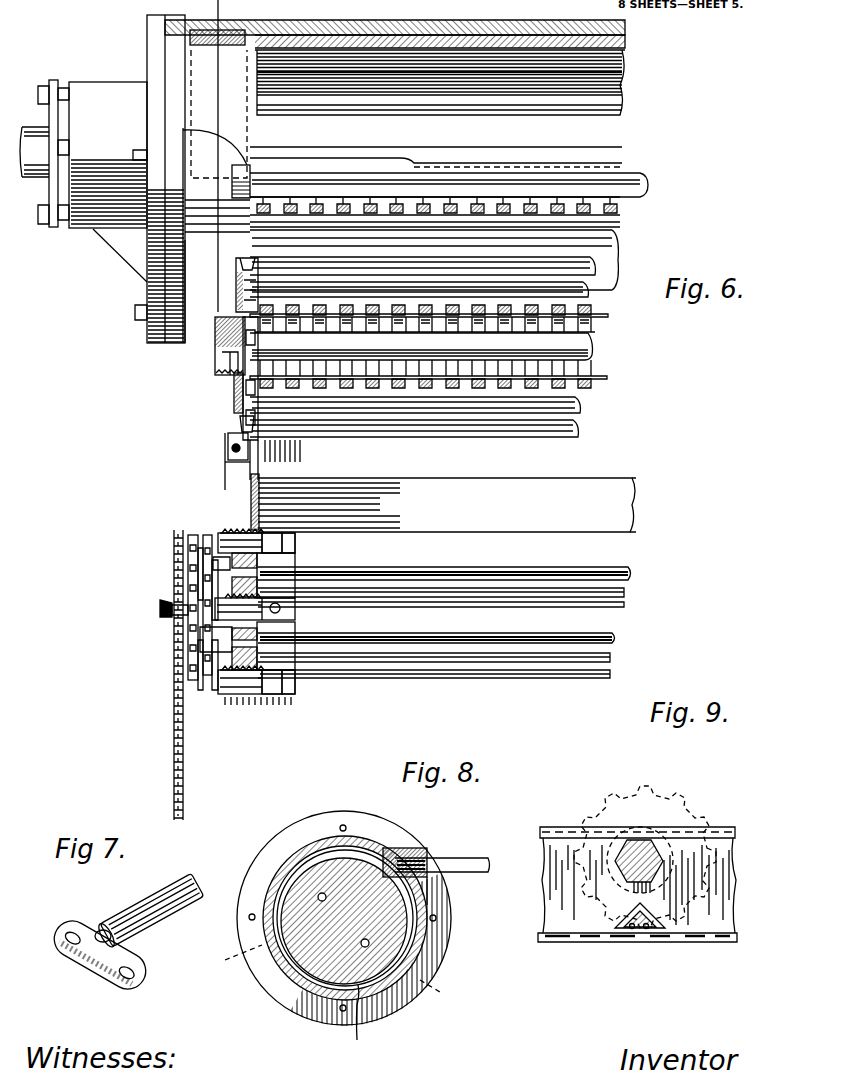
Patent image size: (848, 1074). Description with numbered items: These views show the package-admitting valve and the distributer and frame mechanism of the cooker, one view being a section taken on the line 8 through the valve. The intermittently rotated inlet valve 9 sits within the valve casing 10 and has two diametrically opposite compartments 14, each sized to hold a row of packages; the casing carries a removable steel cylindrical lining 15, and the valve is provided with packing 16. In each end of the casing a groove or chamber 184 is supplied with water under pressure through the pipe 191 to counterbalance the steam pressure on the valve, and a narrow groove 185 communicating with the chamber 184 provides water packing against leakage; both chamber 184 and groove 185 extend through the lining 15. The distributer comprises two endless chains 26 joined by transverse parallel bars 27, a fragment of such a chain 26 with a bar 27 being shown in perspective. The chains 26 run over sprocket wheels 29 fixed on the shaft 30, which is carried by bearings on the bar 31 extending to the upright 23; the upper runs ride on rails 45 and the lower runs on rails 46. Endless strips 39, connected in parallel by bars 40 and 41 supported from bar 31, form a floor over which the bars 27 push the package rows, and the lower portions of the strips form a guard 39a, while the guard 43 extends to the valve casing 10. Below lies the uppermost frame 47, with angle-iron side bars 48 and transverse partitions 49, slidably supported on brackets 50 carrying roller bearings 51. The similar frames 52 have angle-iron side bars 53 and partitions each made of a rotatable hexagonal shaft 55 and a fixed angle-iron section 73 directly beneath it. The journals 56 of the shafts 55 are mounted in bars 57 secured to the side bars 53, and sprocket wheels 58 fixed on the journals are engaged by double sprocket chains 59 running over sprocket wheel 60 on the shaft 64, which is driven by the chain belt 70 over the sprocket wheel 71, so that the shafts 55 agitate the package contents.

In FIG. 6, the section line / shaft 8 is at (218, 45).
In FIG. 6, the inlet valve 9 is at (454, 82).
In FIG. 8, the inlet valve 9 is at (298, 943).
In FIG. 6, the valve casing 10 is at (625, 33).
In FIG. 8, the valve casing 10 is at (320, 820).
In FIG. 6, the compartments 14 is at (622, 72).
In FIG. 8, the compartments 14 is at (322, 931).
In FIG. 6, the cylindrical lining 15 is at (625, 50).
In FIG. 6, the packing 16 is at (590, 158).
In FIG. 6, the upright 23 is at (226, 449).
In FIG. 6, the endless chains 26 is at (240, 422).
In FIG. 7, the endless chains 26 is at (82, 950).
In FIG. 6, the transverse parallel bars 27 is at (592, 292).
In FIG. 7, the transverse parallel bars 27 is at (172, 885).
In FIG. 6, the sprocket wheels 29 is at (218, 330).
In FIG. 6, the shaft 30 is at (594, 348).
In FIG. 6, the bar 31 is at (234, 395).
In FIG. 6, the endless strips or bars 39 is at (478, 305).
In FIG. 6, the guard 39a is at (525, 388).
In FIG. 6, the bar 40 is at (609, 316).
In FIG. 6, the bar 41 is at (608, 378).
In FIG. 6, the guard 43 is at (600, 215).
In FIG. 6, the rails 45 is at (262, 268).
In FIG. 6, the rails 46 is at (228, 462).
In FIG. 6, the uppermost frame 47 is at (631, 512).
In FIG. 6, the side bars 48 is at (250, 488).
In FIG. 6, the transverse parallel bars or partitions 49 is at (446, 505).
In FIG. 6, the brackets 50 is at (285, 545).
In FIG. 6, the roller bearings 51 is at (268, 540).
In FIG. 6, the frames 52 is at (462, 623).
In FIG. 6, the angle-iron side bars 53 is at (275, 585).
In FIG. 9, the angle-iron side bars 53 is at (730, 852).
In FIG. 6, the rotatable shaft 55 is at (628, 568).
In FIG. 9, the rotatable shaft 55 is at (650, 845).
In FIG. 6, the journals 56 is at (280, 614).
In FIG. 9, the journals 56 is at (615, 830).
In FIG. 6, the bars 57 is at (232, 540).
In FIG. 9, the bars 57 is at (722, 832).
In FIG. 6, the sprocket wheels 58 is at (190, 557).
In FIG. 9, the sprocket wheels 58 is at (650, 798).
In FIG. 6, the sprocket chains 59 is at (212, 690).
In FIG. 9, the sprocket chains 59 is at (672, 943).
In FIG. 6, the sprocket wheel 60 is at (203, 568).
In FIG. 6, the shaft 64 is at (165, 612).
In FIG. 6, the chain belt 70 is at (174, 725).
In FIG. 6, the sprocket wheel 71 is at (197, 585).
In FIG. 6, the partition-section 73 is at (626, 604).
In FIG. 9, the partition-section 73 is at (632, 914).
In FIG. 6, the groove or chamber 184 is at (240, 38).
In FIG. 8, the groove or chamber 184 is at (377, 848).
In FIG. 6, the narrow groove 185 is at (140, 275).
In FIG. 8, the narrow groove 185 is at (354, 1023).
In FIG. 6, the pipe 191 is at (145, 33).
In FIG. 8, the pipe 191 is at (478, 858).